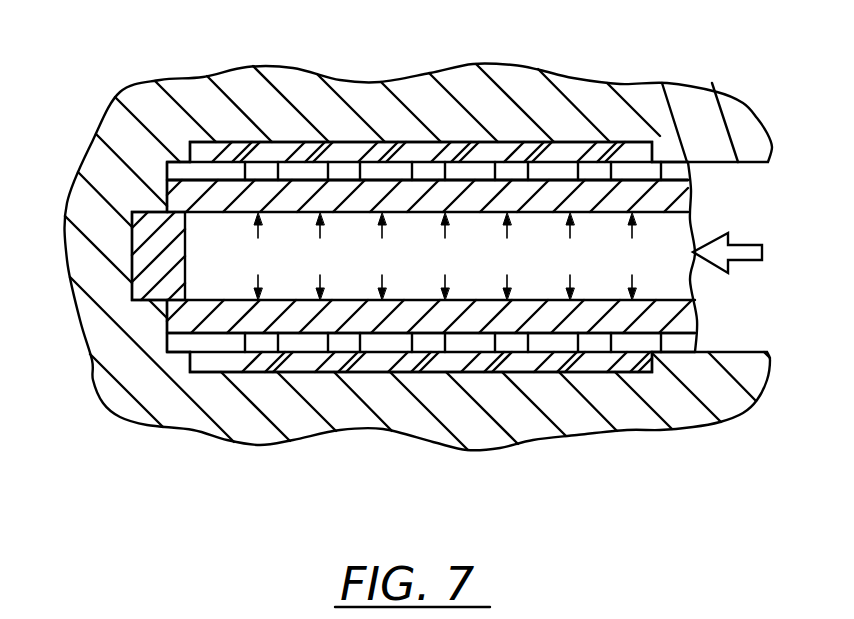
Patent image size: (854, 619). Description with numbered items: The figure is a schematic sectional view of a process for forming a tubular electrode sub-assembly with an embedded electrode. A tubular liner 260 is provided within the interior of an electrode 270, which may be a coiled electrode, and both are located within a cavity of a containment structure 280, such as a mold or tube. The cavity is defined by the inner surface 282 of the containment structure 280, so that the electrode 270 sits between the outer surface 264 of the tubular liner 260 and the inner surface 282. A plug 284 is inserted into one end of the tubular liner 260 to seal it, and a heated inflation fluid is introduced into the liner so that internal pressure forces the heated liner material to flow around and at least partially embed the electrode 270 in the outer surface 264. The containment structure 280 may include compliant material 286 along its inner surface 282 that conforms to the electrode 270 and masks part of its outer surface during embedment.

The tubular liner 260 is at (672, 190).
The outer surface 264 is at (233, 182).
The electrode 270 is at (602, 172).
The containment structure 280 is at (547, 440).
The inner surface 282 is at (173, 343).
The plug 284 is at (143, 247).
The compliant material 286 is at (232, 338).